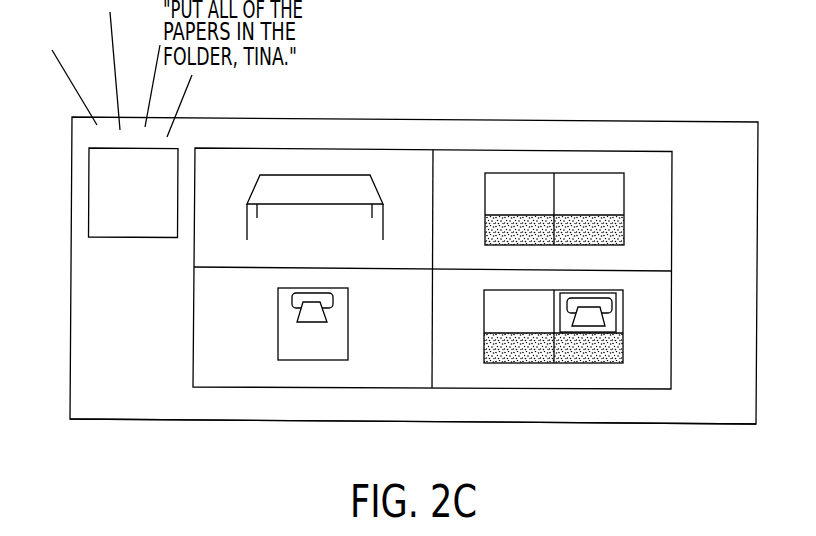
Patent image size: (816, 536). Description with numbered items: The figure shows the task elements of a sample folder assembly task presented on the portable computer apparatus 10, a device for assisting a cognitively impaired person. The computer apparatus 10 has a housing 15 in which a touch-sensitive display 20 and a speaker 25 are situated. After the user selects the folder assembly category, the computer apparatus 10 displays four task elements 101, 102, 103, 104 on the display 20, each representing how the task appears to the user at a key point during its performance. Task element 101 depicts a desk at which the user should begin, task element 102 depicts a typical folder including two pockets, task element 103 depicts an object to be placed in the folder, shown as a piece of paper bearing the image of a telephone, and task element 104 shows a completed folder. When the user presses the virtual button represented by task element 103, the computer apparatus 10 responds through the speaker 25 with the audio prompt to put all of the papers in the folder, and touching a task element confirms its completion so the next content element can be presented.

The portable computer apparatus 10 is at (57, 363).
The housing 15 is at (603, 424).
The touch-sensitive display 20 is at (673, 303).
The speaker 25 is at (142, 238).
The task element 101 is at (290, 158).
The task element 102 is at (515, 162).
The task element 103 is at (241, 367).
The task element 104 is at (455, 367).